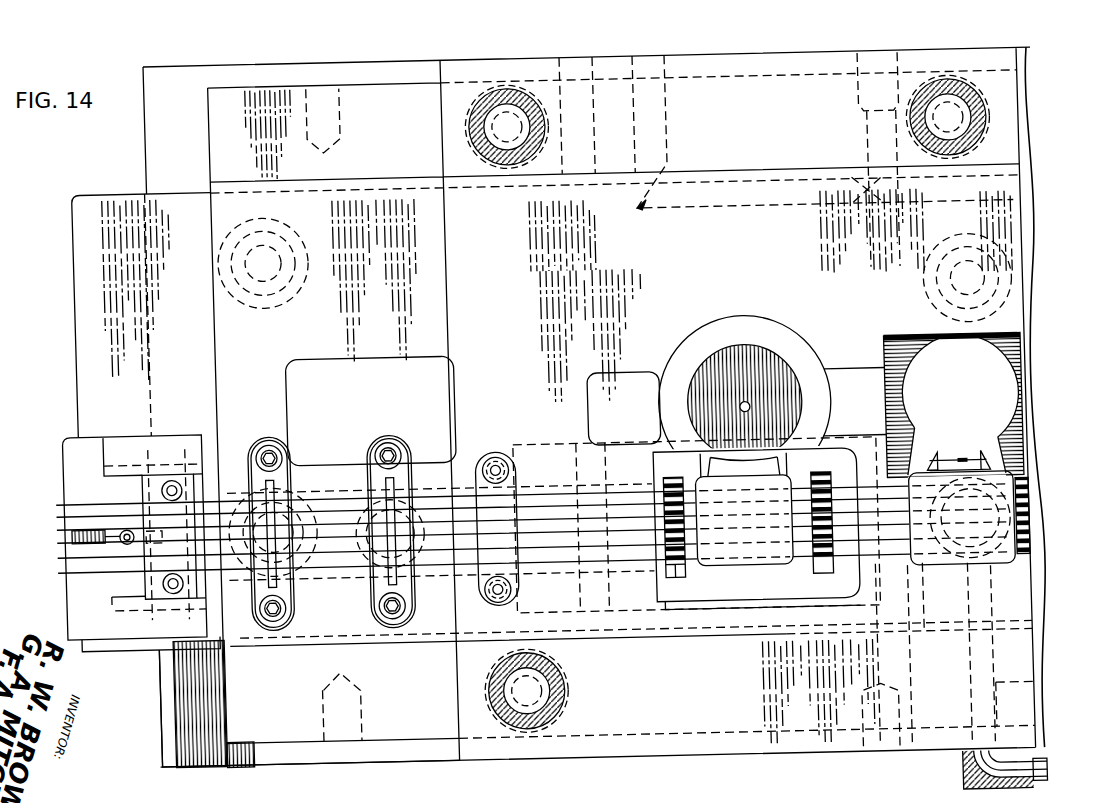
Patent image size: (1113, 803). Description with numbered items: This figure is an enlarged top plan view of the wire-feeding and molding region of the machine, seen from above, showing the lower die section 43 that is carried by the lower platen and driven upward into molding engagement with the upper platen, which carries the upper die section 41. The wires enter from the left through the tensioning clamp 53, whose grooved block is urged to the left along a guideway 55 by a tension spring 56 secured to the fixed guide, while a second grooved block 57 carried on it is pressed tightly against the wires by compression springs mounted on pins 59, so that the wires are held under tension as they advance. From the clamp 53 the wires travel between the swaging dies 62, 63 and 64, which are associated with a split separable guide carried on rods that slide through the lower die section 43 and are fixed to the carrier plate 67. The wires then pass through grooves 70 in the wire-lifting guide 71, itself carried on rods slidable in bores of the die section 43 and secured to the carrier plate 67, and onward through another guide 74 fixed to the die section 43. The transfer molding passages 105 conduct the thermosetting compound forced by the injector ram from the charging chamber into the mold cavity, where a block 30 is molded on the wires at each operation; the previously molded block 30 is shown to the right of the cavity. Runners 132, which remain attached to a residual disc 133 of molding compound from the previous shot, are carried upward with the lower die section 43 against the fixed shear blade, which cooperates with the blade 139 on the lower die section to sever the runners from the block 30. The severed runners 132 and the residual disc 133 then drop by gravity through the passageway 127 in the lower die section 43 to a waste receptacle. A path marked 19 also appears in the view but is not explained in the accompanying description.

The feed mechanism 19 is at (810, 462).
The block 30 is at (709, 562).
The upper die section 41 is at (265, 727).
The lower die section 43 is at (767, 588).
The tensioning clamp 53 is at (133, 582).
The guideway 55 is at (113, 611).
The tension spring 56 is at (81, 534).
The grooved block 57 is at (156, 505).
The pins 59 is at (174, 482).
The swaging die 62 is at (263, 446).
The swaging die 63 is at (478, 468).
The swaging die 64 is at (400, 472).
The carrier plate 67 is at (127, 437).
The grooves 70 is at (672, 549).
The wire-lifting guide 71 is at (677, 566).
The guide 74 is at (823, 477).
The transfer molding passages 105 is at (708, 467).
The passageway 127 is at (1023, 347).
The runners 132 is at (990, 457).
The residual disc 133 is at (1004, 396).
The blade 139 is at (1013, 491).